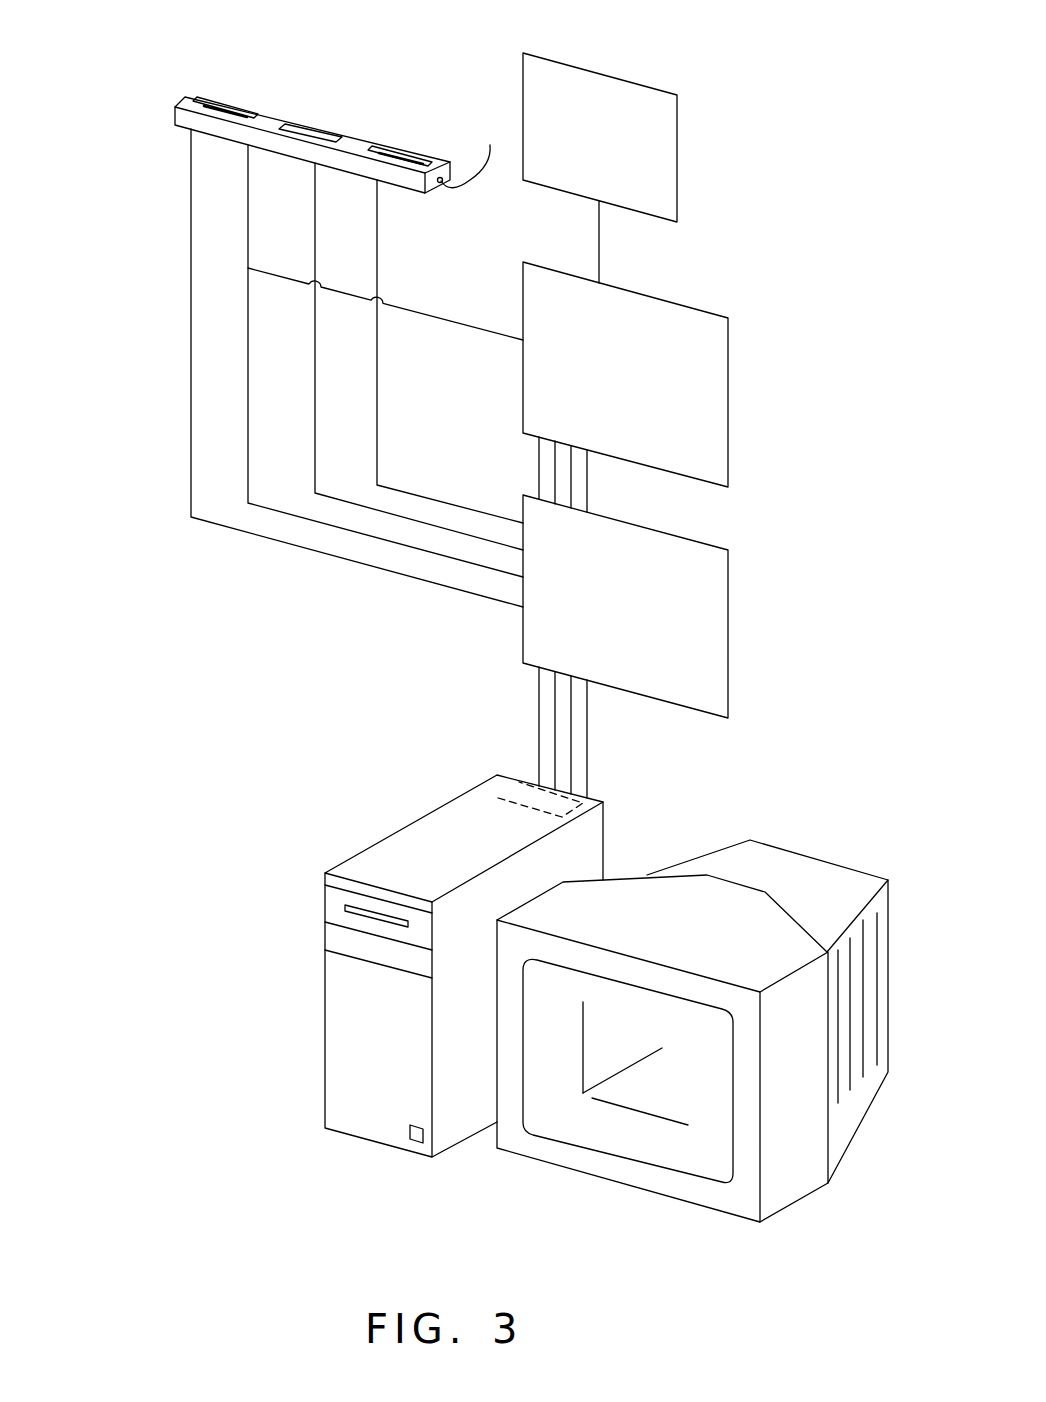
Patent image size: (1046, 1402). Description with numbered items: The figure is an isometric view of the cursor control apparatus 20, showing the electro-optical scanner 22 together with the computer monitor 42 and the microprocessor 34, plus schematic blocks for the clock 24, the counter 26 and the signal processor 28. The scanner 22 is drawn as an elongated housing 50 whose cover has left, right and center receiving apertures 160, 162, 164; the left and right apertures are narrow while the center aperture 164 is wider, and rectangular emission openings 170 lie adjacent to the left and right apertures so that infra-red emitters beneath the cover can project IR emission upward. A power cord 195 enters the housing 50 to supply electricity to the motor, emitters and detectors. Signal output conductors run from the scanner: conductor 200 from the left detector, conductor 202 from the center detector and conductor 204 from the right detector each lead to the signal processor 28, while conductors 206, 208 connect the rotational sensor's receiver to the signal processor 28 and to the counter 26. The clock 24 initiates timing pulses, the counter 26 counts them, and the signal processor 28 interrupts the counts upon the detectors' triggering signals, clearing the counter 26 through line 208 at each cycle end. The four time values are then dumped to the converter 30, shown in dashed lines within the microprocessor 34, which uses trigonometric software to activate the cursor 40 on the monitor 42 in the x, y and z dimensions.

The cursor control apparatus 20 is at (722, 93).
The electro-optical scanner 22 is at (210, 63).
The astable timing clock 24 is at (572, 65).
The counter 26 is at (728, 357).
The signal processor 28 is at (728, 643).
The converter 30 is at (513, 782).
The microprocessor 34 is at (373, 843).
The cursor 40 is at (583, 1093).
The monitor 42 is at (803, 1168).
The housing 50 is at (363, 133).
The left receiving aperture 160 is at (197, 97).
The right receiving aperture 162 is at (378, 152).
The center receiving aperture 164 is at (293, 117).
The emission openings 170 is at (217, 110).
The power cord 195 is at (463, 188).
The signal output conductor 200 is at (225, 527).
The signal output conductor 202 is at (443, 533).
The signal output conductor 204 is at (493, 520).
The signal output conductor 206 is at (343, 532).
The signal output conductor 208 is at (495, 338).